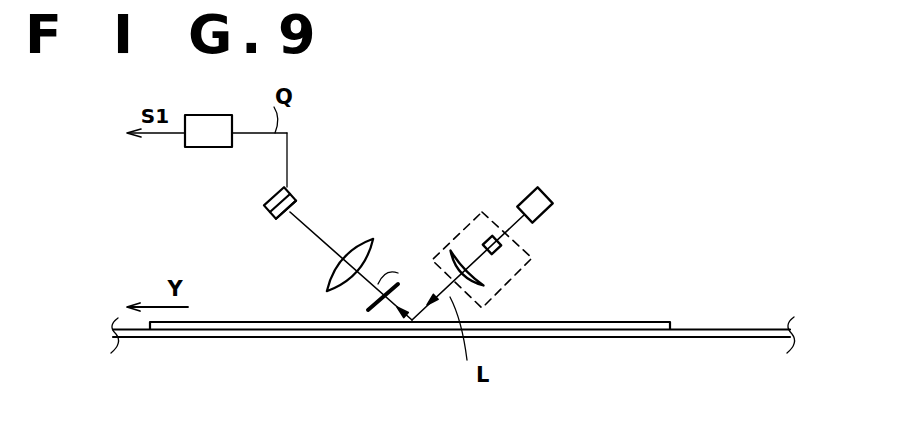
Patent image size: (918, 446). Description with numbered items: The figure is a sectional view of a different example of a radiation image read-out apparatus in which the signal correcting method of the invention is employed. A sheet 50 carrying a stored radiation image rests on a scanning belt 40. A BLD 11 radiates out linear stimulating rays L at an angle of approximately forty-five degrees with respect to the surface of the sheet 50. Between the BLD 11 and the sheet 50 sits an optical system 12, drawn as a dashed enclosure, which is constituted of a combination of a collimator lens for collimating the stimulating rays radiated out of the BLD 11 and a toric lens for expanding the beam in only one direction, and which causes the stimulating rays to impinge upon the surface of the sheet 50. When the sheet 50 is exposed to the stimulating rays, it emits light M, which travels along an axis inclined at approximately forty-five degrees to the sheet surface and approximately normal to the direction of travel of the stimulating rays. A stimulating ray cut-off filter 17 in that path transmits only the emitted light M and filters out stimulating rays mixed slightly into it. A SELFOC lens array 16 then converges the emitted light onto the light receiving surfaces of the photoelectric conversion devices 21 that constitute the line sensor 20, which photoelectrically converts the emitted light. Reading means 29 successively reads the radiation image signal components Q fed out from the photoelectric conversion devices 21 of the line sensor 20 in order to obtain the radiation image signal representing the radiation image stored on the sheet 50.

The BLD 11 is at (553, 206).
The optical system 12 is at (533, 261).
The SELFOC lens array 16 is at (360, 241).
The stimulating ray cut-off filter 17 is at (380, 314).
The line sensor 20 is at (262, 207).
The photoelectric conversion device 21 is at (303, 200).
The reading means 29 is at (207, 131).
The scanning belt 40 is at (132, 339).
The sheet 50 is at (654, 321).